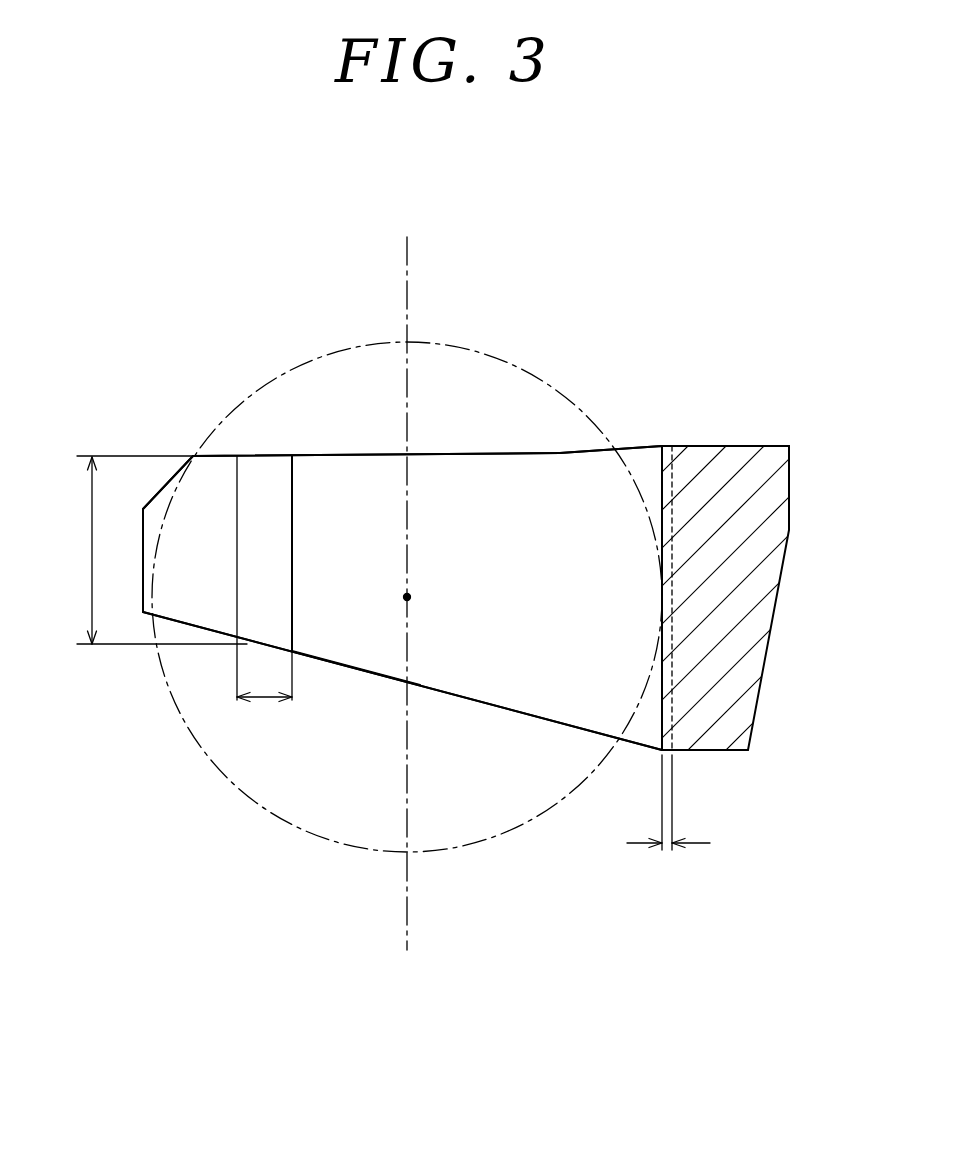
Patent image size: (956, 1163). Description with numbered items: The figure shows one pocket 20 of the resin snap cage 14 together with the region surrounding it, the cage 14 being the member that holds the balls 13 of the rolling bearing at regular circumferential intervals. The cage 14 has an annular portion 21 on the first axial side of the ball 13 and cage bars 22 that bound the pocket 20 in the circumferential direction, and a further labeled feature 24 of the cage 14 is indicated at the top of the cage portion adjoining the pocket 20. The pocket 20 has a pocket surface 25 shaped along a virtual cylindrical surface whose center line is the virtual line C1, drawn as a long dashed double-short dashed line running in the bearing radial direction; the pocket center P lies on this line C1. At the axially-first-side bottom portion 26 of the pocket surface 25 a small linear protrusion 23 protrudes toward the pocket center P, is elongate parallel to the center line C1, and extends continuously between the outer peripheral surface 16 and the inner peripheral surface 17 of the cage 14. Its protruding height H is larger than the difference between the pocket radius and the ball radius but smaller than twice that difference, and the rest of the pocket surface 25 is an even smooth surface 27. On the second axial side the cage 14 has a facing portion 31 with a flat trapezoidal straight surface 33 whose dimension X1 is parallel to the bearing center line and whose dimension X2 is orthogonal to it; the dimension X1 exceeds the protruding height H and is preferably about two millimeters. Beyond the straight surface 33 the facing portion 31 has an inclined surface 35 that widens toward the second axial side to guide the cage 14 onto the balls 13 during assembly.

The ball 13 is at (505, 360).
The cage 14 is at (336, 668).
The outer peripheral surface 16 is at (760, 440).
The inner peripheral surface 17 is at (712, 755).
The pocket 20 is at (490, 680).
The annular portion 21 is at (750, 660).
The cage bar 22 is at (407, 452).
The linear protrusion 23 is at (640, 467).
The top face of mounting portion 24 is at (735, 445).
The pocket surface 25 is at (560, 470).
The axially-first-side bottom portion 26 is at (662, 674).
The smooth surface 27 is at (367, 655).
The facing portion 31 is at (263, 455).
The straight surface 33 is at (277, 518).
The inclined surface 35 is at (210, 483).
The pocket center P is at (410, 596).
The virtual line C1 is at (410, 915).
The protruding height H is at (668, 819).
The dimension in the first direction X1 is at (264, 715).
The dimension in the second direction X2 is at (148, 550).